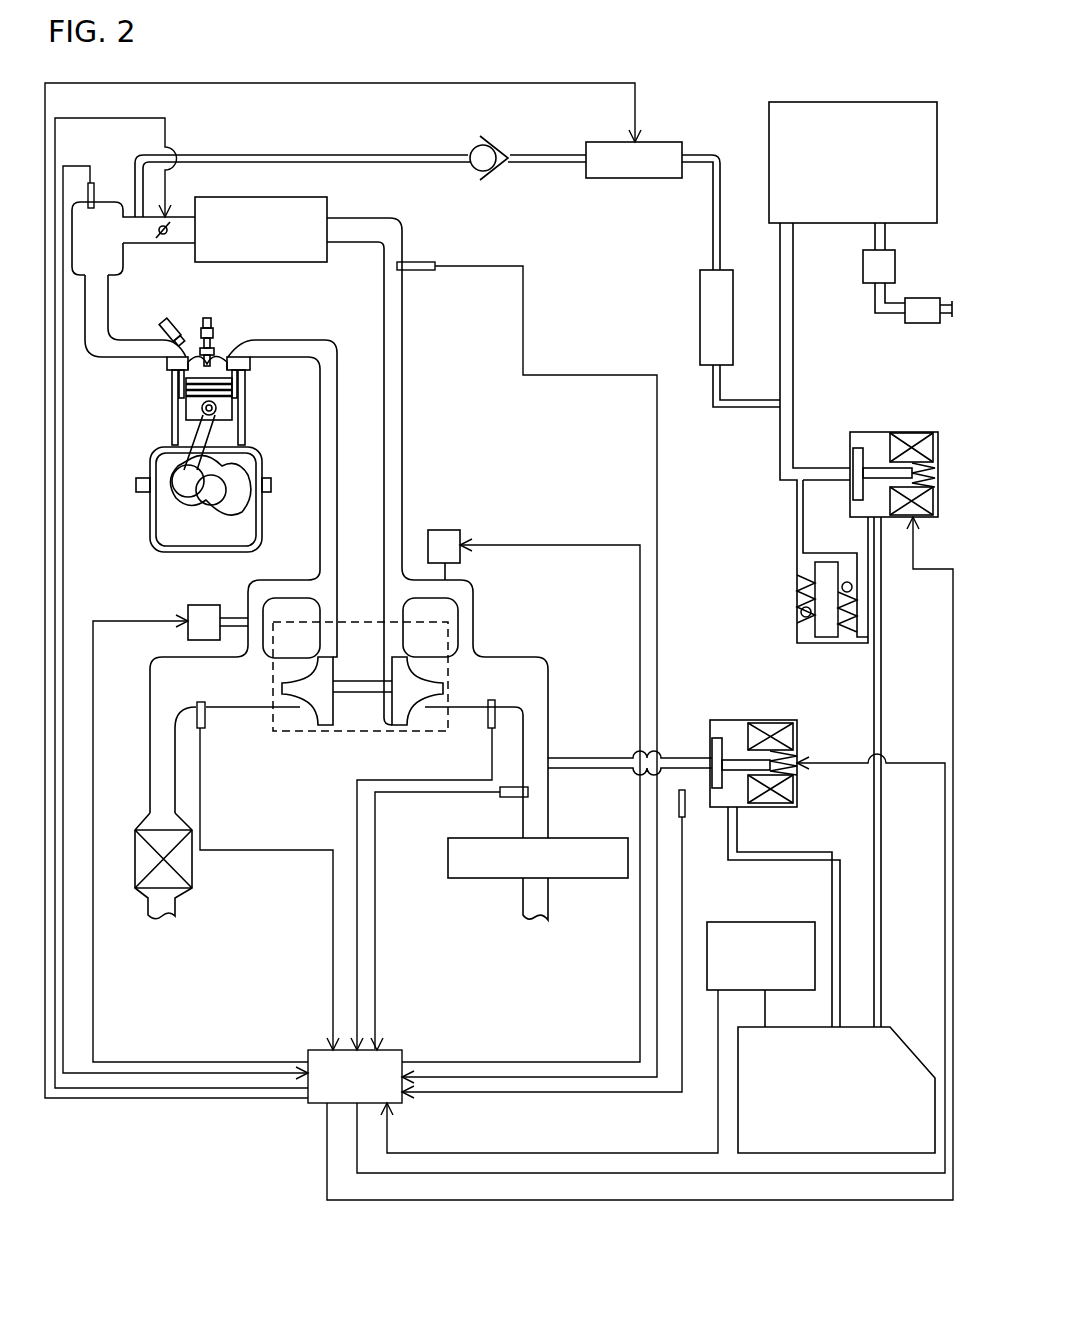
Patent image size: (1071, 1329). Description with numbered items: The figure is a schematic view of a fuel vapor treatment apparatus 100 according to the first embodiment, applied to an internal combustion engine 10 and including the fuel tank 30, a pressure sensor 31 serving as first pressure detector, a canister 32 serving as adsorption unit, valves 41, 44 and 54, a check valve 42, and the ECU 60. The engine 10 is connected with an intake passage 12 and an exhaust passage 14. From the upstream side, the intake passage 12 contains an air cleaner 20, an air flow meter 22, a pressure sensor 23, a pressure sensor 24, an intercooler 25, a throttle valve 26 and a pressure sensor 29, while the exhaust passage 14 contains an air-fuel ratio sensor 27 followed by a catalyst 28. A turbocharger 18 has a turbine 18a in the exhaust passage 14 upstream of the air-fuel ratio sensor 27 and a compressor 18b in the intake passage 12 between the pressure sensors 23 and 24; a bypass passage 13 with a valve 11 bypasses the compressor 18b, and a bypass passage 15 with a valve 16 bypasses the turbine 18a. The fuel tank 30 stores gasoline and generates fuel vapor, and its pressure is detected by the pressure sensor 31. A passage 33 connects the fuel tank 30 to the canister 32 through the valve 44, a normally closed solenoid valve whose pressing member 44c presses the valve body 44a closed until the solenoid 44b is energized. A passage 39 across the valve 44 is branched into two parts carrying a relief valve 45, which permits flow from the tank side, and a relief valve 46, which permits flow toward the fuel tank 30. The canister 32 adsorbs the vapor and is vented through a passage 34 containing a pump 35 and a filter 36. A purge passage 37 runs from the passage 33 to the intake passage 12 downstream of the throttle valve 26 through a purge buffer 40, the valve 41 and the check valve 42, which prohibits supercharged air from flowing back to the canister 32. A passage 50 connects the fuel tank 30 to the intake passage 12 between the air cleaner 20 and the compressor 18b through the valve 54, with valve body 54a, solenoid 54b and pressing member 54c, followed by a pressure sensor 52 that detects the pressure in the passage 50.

The internal combustion engine 10 is at (153, 440).
The valve 11 is at (443, 528).
The intake passage 12 is at (403, 383).
The bypass passage 13 is at (474, 602).
The exhaust passage 14 is at (151, 753).
The bypass passage 15 is at (258, 586).
The valve 16 is at (190, 608).
The turbocharger 18 is at (360, 699).
The turbine 18a is at (330, 722).
The compressor 18b is at (395, 727).
The air cleaner 20 is at (610, 880).
The air flow meter 22 is at (505, 798).
The pressure sensor 23 is at (488, 730).
The pressure sensor 24 is at (428, 272).
The intercooler 25 is at (310, 264).
The throttle valve 26 is at (166, 240).
The air-fuel ratio sensor 27 is at (203, 730).
The catalyst 28 is at (150, 898).
The pressure sensor 29 is at (96, 183).
The fuel tank 30 is at (912, 1050).
The pressure sensor 31 is at (792, 922).
The canister 32 is at (816, 226).
The passage 33 is at (796, 313).
The passage 34 is at (886, 243).
The pump 35 is at (896, 275).
The filter 36 is at (930, 324).
The purge passage 37 is at (422, 154).
The passage 39 is at (797, 528).
The purge buffer 40 is at (700, 316).
The valve 41 is at (612, 180).
The check valve 42 is at (478, 174).
The valve 44 is at (878, 435).
The valve body 44a is at (858, 447).
The solenoid 44b is at (900, 432).
The pressing member 44c is at (937, 480).
The relief valve 45 is at (800, 612).
The relief valve 46 is at (846, 580).
The passage 50 is at (604, 756).
The pressure sensor 52 is at (684, 820).
The valve 54 is at (744, 727).
The valve body 54a is at (718, 738).
The solenoid 54b is at (756, 722).
The pressing member 54c is at (798, 758).
The ECU 60 is at (395, 1048).
The fuel vapor treatment apparatus 100 is at (745, 112).